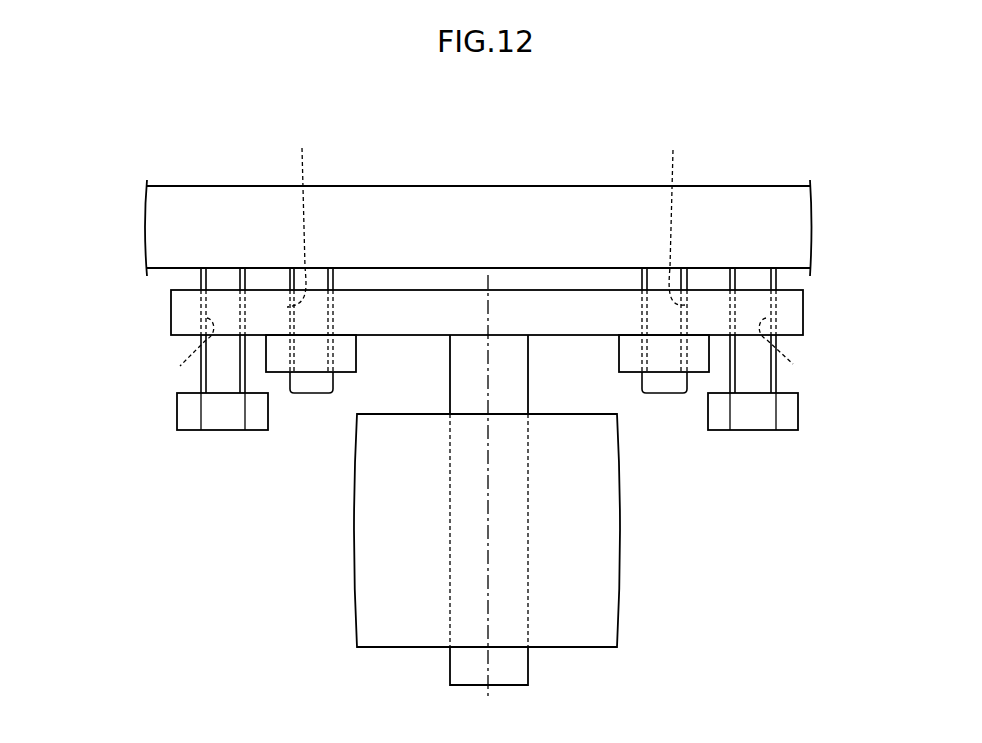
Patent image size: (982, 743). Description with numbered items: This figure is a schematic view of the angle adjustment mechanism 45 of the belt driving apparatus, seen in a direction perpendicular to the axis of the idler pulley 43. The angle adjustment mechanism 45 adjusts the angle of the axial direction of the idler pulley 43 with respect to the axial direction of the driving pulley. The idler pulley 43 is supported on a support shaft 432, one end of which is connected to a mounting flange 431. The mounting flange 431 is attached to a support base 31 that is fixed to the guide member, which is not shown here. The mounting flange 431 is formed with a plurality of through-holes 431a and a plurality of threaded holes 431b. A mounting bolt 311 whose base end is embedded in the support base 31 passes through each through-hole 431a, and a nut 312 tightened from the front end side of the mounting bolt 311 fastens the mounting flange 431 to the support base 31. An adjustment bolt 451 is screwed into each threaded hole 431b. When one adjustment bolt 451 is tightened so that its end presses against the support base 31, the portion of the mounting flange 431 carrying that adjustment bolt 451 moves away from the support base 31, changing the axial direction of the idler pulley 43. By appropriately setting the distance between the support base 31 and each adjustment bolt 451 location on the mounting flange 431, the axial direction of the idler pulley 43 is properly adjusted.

The support base 31 is at (437, 212).
The mounting bolt 311 is at (312, 388).
The nut 312 is at (344, 354).
The idler pulley 43 is at (623, 552).
The mounting flange 431 is at (545, 310).
The through-hole 431a is at (494, 214).
The threaded hole 431b is at (487, 349).
The support shaft 432 is at (516, 667).
The angle adjustment mechanism 45 is at (152, 427).
The adjustment bolt 451 is at (220, 422).